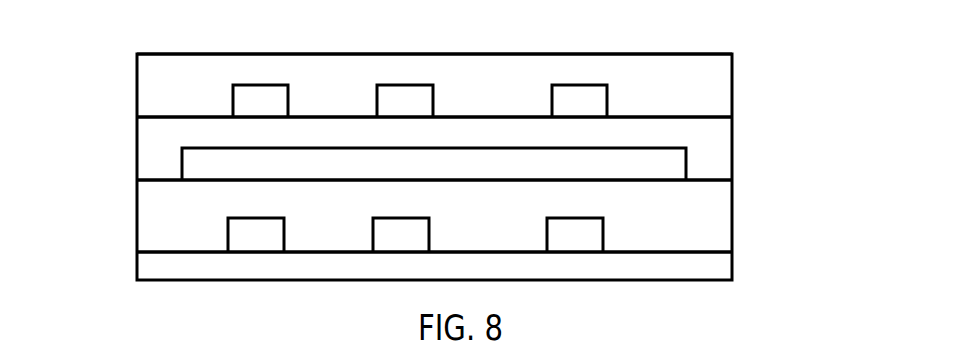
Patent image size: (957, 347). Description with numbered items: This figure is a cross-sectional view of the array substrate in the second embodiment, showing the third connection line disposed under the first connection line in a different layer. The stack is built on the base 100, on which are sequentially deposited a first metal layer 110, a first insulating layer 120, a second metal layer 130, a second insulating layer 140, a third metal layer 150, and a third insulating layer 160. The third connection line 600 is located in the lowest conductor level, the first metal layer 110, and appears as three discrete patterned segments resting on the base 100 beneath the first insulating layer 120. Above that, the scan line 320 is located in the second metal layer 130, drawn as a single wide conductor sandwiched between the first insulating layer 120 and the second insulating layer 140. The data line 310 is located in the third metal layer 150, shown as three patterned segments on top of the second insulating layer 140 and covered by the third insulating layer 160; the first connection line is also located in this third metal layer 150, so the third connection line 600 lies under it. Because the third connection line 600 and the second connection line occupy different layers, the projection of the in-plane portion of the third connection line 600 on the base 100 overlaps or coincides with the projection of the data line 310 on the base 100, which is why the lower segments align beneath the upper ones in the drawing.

The base 100 is at (162, 265).
The first metal layer 110 is at (549, 233).
The third connection line 600 is at (582, 238).
The first insulating layer 120 is at (163, 212).
The second metal layer 130 is at (525, 160).
The scan line 320 is at (578, 162).
The second insulating layer 140 is at (163, 142).
The third metal layer 150 is at (549, 98).
The data line 310 is at (573, 102).
The third insulating layer 160 is at (163, 87).